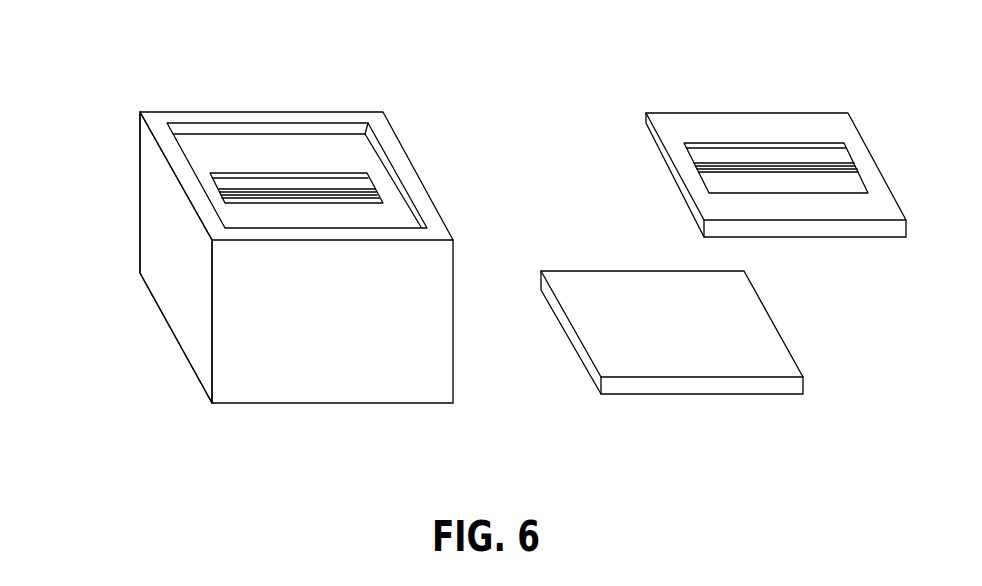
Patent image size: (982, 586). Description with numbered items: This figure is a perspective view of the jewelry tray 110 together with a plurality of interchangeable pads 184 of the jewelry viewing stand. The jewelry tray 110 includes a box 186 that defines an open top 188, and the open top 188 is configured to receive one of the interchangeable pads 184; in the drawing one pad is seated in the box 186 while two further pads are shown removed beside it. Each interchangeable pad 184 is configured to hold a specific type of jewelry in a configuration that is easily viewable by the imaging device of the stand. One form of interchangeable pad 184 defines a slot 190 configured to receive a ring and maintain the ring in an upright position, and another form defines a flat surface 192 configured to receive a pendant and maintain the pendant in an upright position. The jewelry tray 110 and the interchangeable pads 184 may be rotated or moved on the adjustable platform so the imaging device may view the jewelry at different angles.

The jewelry tray 110 is at (312, 110).
The interchangeable pads 184 is at (402, 220).
The box 186 is at (153, 182).
The open top 188 is at (210, 228).
The slot 190 is at (312, 187).
The flat surface 192 is at (603, 310).